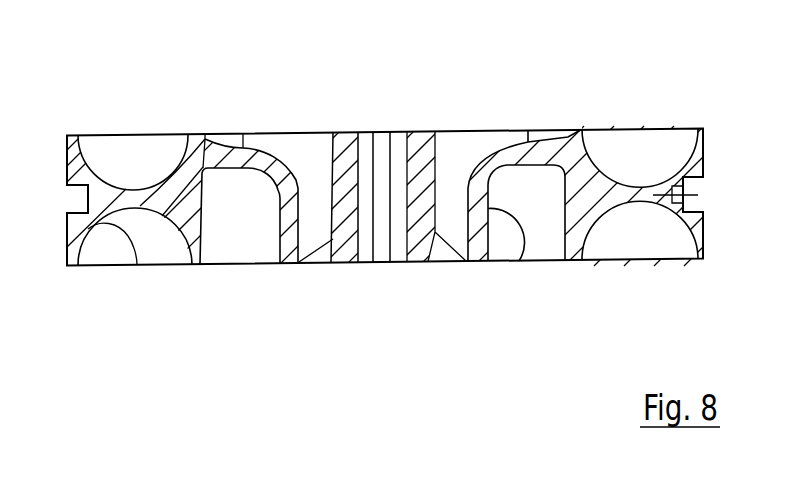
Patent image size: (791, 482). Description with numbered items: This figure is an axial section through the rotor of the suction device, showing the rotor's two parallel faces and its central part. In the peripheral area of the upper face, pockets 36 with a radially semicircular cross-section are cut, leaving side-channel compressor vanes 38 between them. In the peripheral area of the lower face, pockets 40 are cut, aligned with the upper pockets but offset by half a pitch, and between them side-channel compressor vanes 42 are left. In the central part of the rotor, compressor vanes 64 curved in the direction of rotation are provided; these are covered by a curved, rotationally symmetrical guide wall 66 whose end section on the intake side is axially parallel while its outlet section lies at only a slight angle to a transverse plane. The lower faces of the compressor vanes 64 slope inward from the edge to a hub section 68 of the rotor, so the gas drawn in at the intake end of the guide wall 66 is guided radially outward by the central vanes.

The pockets 36 is at (123, 142).
The side-channel compressor vanes 38 is at (160, 152).
The pockets 40 is at (132, 266).
The side-channel compressor vanes 42 is at (545, 122).
The compressor vanes 64 is at (323, 157).
The guide wall 66 is at (522, 254).
The hub section 68 is at (345, 243).